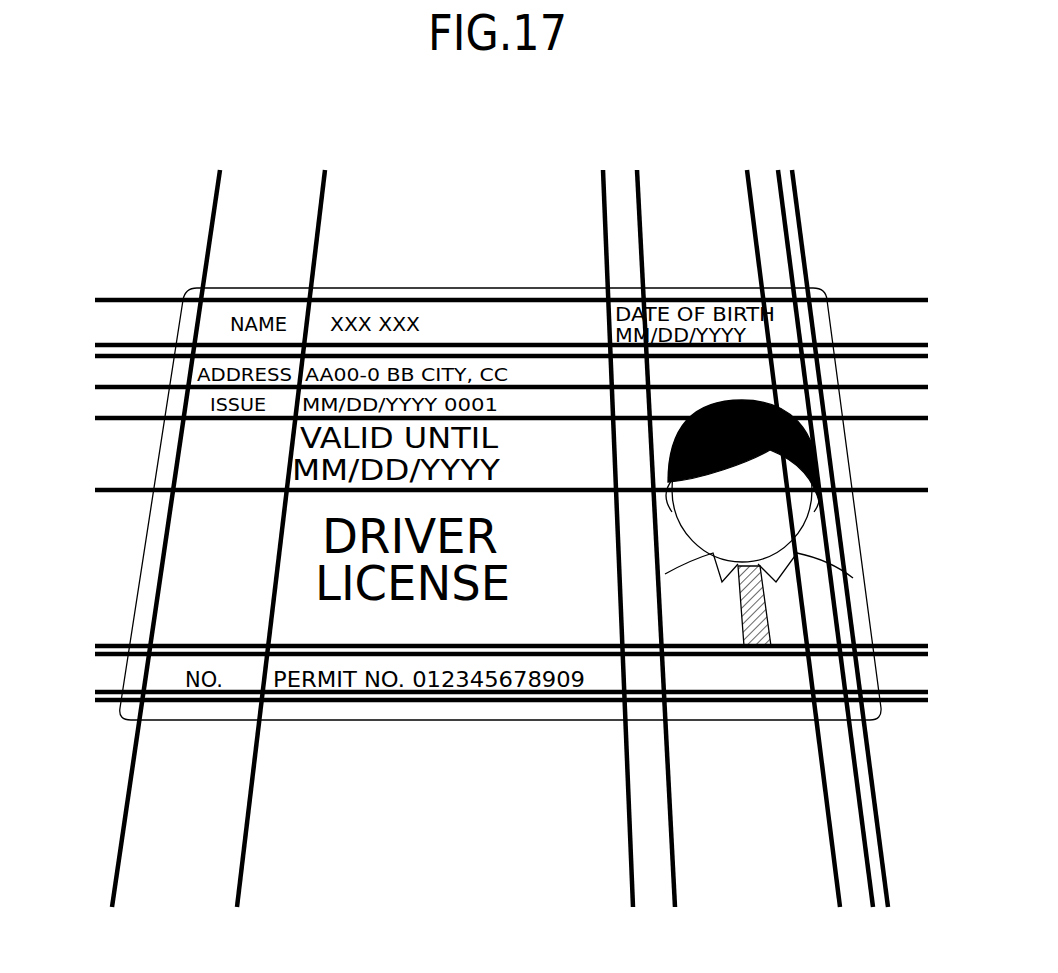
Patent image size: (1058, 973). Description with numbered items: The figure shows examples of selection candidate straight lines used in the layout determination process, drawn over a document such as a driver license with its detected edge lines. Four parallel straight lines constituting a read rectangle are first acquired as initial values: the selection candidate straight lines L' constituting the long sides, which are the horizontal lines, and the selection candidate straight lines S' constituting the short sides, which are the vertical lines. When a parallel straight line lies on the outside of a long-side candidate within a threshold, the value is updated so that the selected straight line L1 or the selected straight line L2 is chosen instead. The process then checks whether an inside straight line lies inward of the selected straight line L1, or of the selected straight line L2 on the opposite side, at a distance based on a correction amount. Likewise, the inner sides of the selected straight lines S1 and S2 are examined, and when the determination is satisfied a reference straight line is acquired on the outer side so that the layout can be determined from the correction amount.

The selection candidate straight lines constituting short sides S' is at (529, 510).
The selection candidate straight lines constituting long sides L' is at (487, 504).
The selected straight line L1 is at (890, 298).
The selected straight line L2 is at (905, 705).
The selected straight line S1 is at (112, 866).
The selected straight line S2 is at (888, 866).